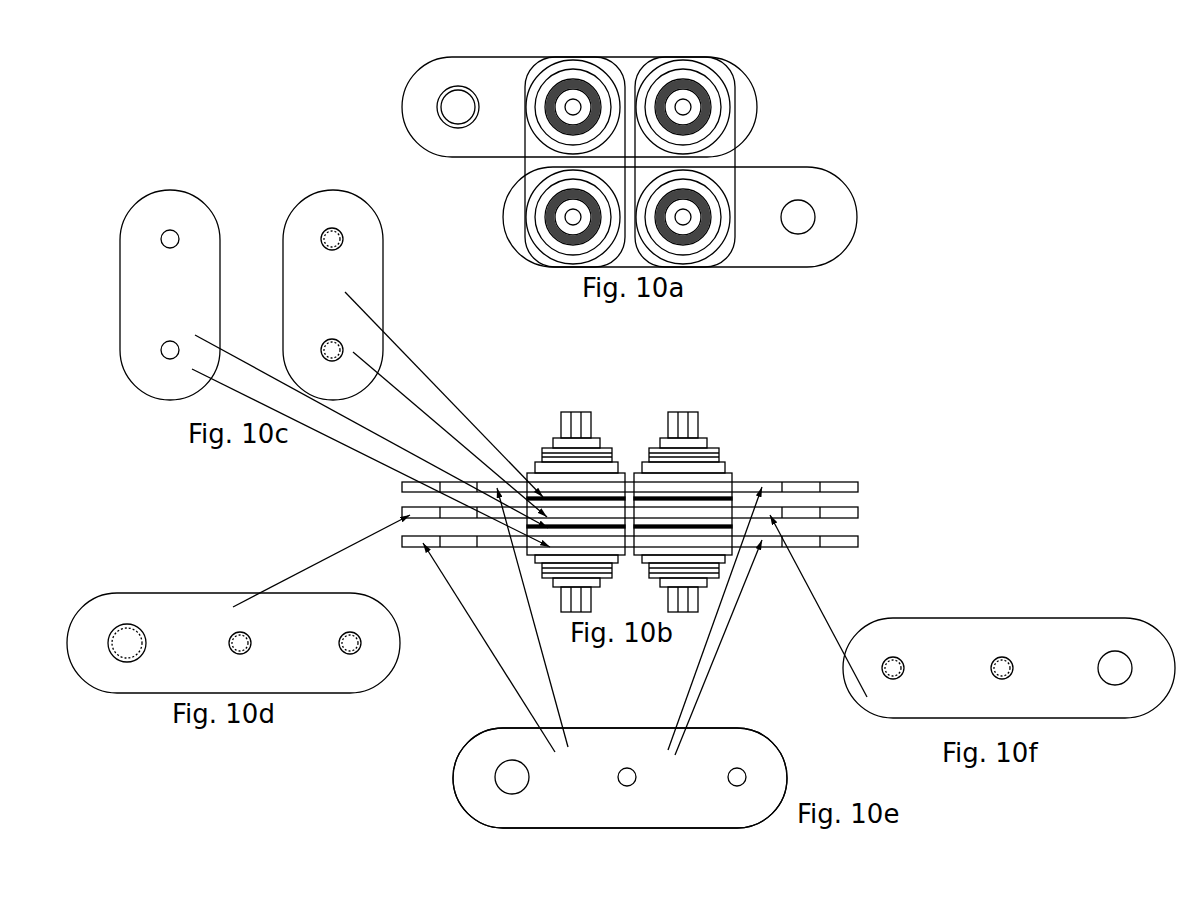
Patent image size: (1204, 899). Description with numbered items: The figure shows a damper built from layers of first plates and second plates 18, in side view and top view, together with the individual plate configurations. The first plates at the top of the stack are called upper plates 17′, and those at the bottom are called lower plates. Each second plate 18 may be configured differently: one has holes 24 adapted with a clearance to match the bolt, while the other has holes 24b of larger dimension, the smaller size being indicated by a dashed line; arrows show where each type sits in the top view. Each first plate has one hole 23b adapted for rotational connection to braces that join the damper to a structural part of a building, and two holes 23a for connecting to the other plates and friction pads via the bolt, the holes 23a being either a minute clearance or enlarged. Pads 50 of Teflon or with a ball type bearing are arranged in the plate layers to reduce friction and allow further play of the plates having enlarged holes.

In FIG. 10A, the upper plate 17′ is at (497, 85).
In FIG. 10D, the upper plate 17′ is at (220, 652).
In FIG. 10E, the upper plate 17′ is at (578, 784).
In FIG. 10A, the second plate 18 is at (530, 165).
In FIG. 10C, the second plate 18 is at (165, 295).
In FIG. 10C, the hole 24 is at (153, 239).
In FIG. 10C, the hole 24b is at (316, 240).
In FIG. 10D, the hole 23a is at (240, 623).
In FIG. 10E, the hole 23a is at (627, 757).
In FIG. 10F, the hole 23a is at (895, 647).
In FIG. 10D, the hole 23b is at (130, 620).
In FIG. 10E, the hole 23b is at (508, 753).
In FIG. 10F, the hole 23b is at (1123, 642).
In FIG. 10B, the pad 50 is at (602, 526).